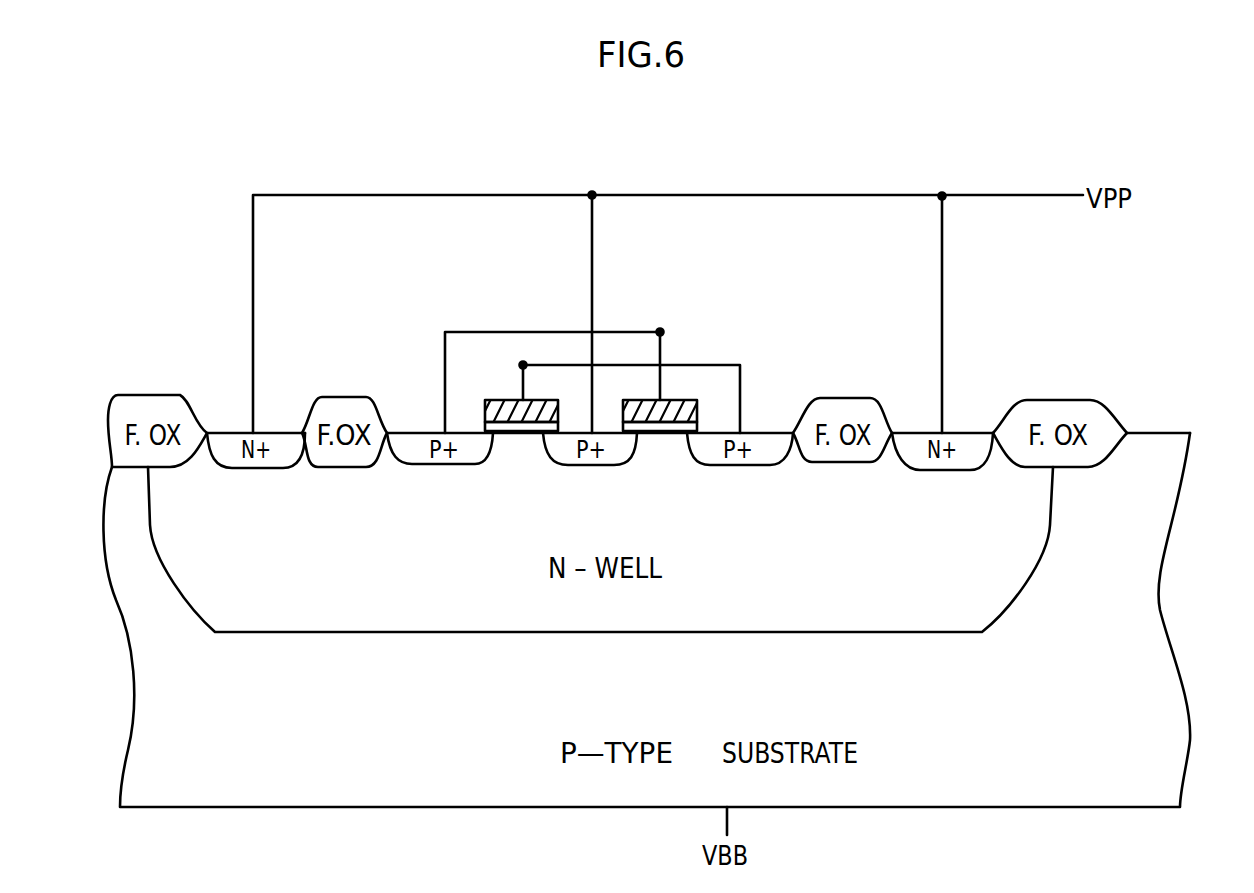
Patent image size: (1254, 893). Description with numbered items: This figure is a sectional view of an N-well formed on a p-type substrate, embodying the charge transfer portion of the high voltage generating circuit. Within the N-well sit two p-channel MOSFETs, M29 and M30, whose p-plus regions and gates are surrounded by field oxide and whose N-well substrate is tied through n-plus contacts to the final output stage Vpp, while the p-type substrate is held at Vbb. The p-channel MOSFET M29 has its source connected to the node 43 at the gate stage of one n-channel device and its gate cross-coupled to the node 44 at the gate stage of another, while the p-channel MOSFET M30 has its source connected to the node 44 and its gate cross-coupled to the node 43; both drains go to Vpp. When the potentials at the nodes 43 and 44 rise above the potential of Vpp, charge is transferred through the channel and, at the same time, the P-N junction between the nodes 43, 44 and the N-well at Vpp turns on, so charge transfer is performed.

The node 43 is at (523, 365).
The node 44 is at (660, 332).
The p-channel MOSFET M29 is at (517, 436).
The p-channel MOSFET M30 is at (658, 436).